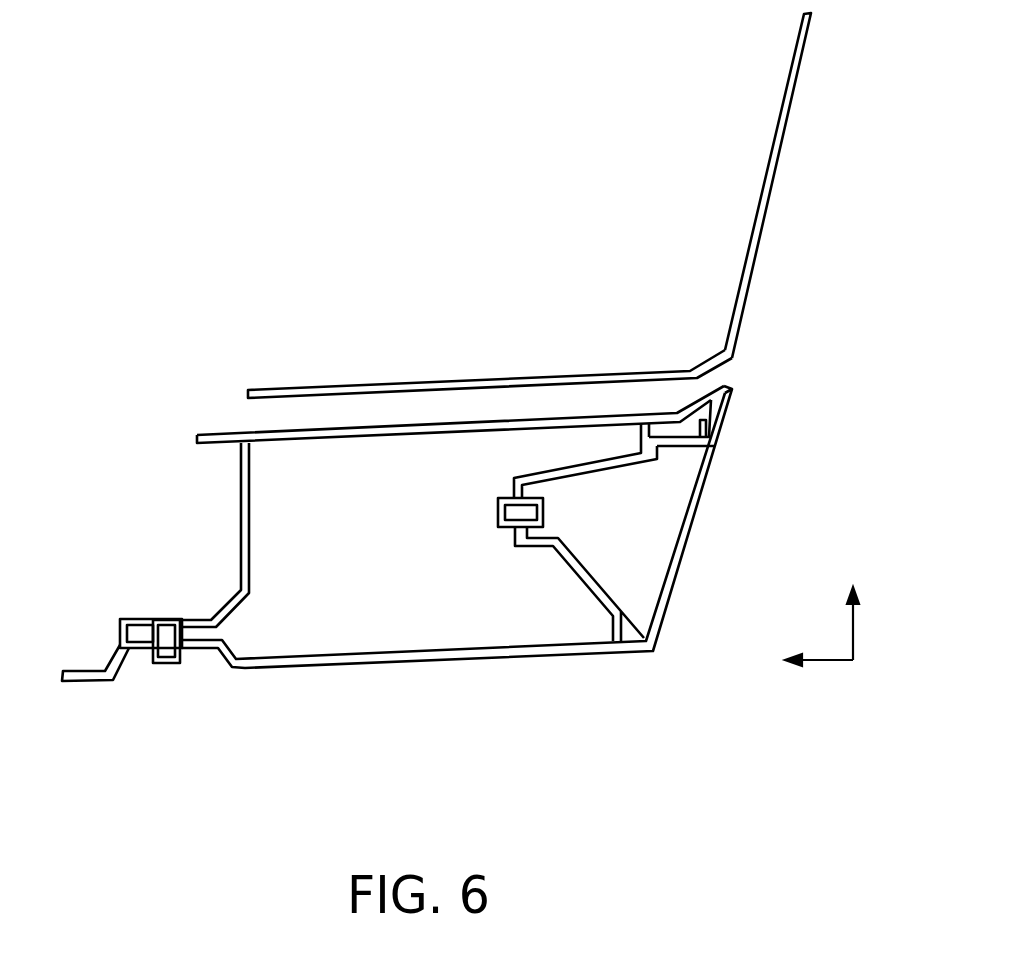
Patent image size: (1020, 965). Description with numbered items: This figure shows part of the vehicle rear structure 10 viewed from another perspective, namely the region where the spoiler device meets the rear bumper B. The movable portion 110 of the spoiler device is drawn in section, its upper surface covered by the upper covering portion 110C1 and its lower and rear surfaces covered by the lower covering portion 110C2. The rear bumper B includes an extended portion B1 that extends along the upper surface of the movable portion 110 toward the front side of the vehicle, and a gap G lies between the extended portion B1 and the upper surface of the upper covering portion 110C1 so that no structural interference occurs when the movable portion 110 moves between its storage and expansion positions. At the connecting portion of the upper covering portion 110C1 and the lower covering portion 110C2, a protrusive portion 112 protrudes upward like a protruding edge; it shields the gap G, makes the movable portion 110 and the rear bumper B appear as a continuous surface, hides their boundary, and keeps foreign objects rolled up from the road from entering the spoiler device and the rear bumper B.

The vehicle rear structure 10 is at (98, 798).
The rear bumper B is at (800, 57).
The extended portion B1 is at (378, 392).
The gap G is at (327, 417).
The movable portion 110 is at (436, 519).
The upper covering portion 110C1 is at (502, 427).
The lower covering portion 110C2 is at (698, 500).
The protrusive portion 112 is at (718, 397).